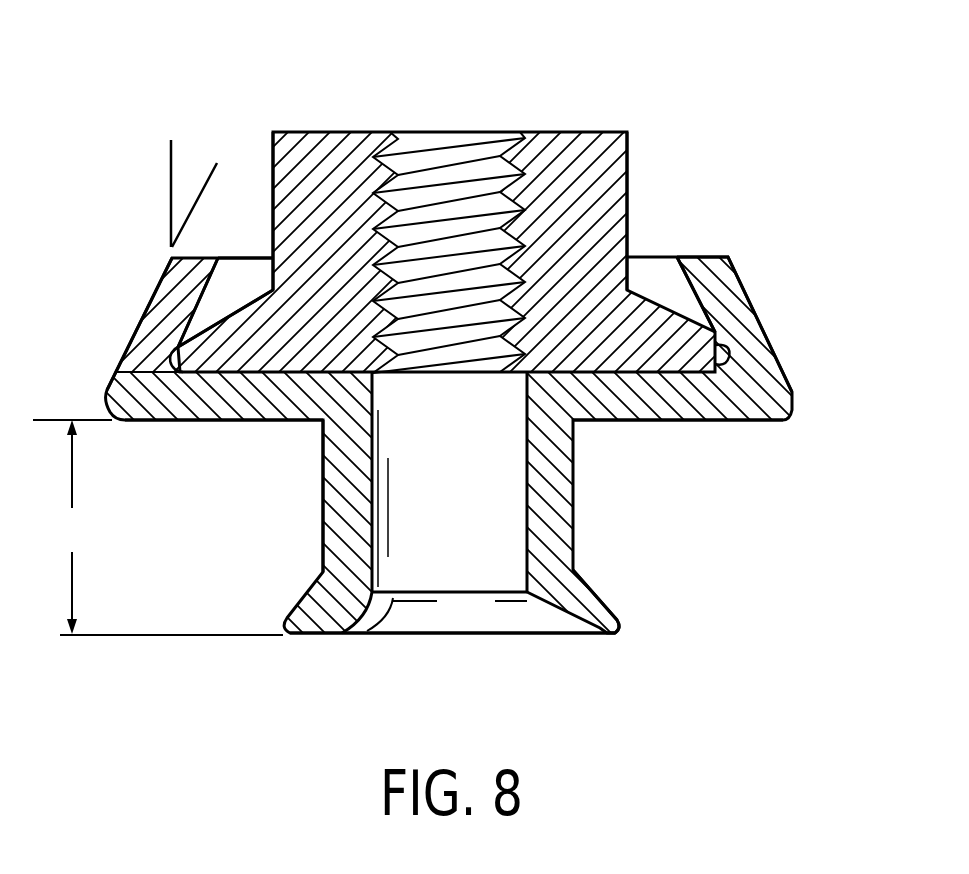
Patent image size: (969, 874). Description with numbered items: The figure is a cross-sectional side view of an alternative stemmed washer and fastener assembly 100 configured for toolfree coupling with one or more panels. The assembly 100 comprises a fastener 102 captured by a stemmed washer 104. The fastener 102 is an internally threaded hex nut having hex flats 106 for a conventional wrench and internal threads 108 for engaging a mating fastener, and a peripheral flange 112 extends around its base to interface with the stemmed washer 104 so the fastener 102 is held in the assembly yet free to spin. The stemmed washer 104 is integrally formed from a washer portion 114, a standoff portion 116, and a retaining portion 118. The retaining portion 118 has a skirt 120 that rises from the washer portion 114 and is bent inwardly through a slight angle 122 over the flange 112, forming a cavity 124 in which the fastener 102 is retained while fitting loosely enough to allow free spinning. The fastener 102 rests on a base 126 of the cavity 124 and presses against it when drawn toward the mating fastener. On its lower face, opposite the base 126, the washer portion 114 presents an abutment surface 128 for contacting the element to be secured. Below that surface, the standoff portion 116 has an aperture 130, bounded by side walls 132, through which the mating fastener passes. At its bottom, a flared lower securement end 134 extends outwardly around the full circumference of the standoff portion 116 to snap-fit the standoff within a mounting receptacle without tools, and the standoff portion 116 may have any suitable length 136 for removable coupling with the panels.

The stemmed washer and fastener assembly 100 is at (598, 76).
The fastener 102 is at (593, 132).
The stemmed washer 104 is at (787, 408).
The hex flats 106 is at (272, 162).
The internal threads 108 is at (430, 138).
The peripheral flange 112 is at (720, 352).
The washer portion 114 is at (673, 410).
The standoff portion 116 is at (323, 523).
The retaining portion 118 is at (158, 295).
The skirt 120 is at (740, 272).
The angle 122 is at (180, 177).
The cavity 124 is at (232, 290).
The base 126 is at (190, 352).
The abutment surface 128 is at (228, 420).
The aperture 130 is at (520, 517).
The side walls 132 is at (552, 573).
The lower securement end 134 is at (603, 633).
The length 136 is at (158, 527).